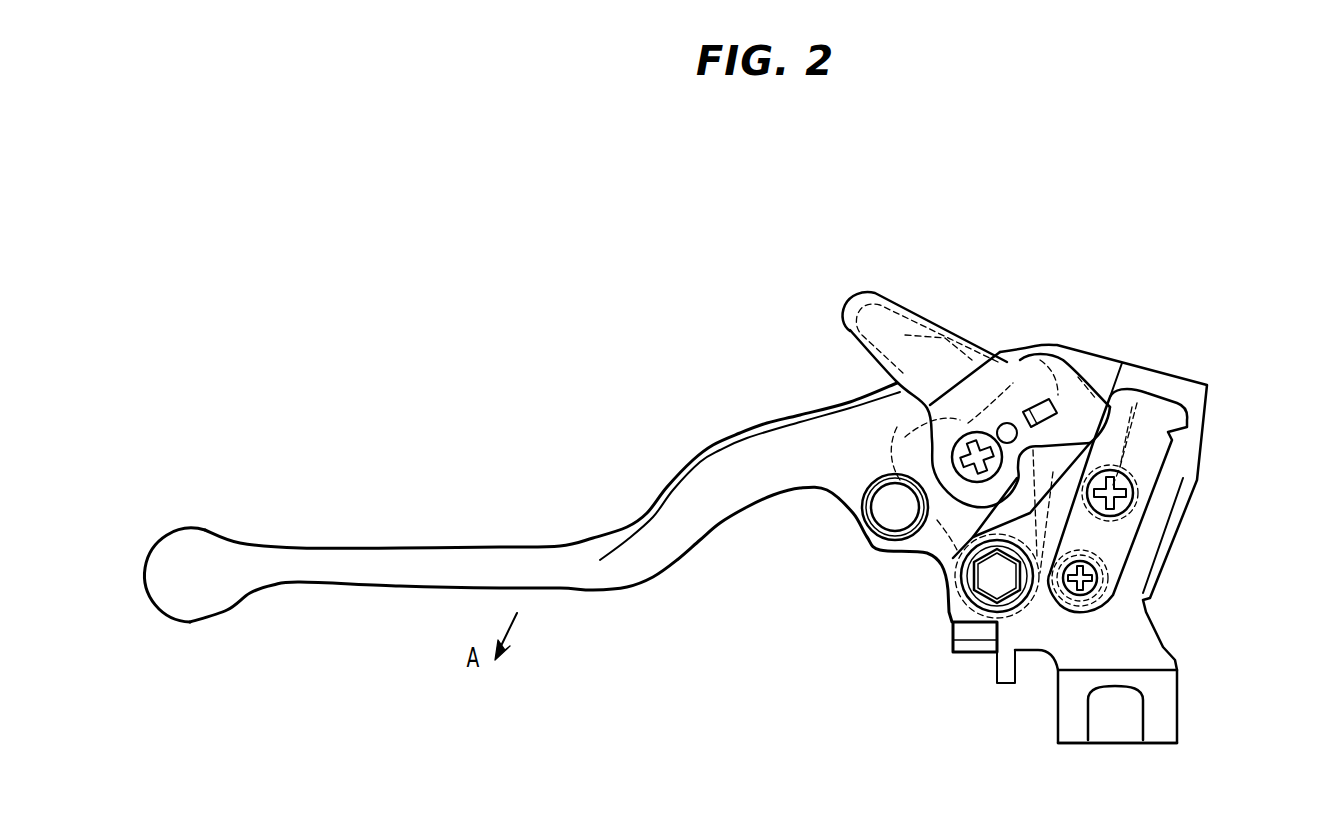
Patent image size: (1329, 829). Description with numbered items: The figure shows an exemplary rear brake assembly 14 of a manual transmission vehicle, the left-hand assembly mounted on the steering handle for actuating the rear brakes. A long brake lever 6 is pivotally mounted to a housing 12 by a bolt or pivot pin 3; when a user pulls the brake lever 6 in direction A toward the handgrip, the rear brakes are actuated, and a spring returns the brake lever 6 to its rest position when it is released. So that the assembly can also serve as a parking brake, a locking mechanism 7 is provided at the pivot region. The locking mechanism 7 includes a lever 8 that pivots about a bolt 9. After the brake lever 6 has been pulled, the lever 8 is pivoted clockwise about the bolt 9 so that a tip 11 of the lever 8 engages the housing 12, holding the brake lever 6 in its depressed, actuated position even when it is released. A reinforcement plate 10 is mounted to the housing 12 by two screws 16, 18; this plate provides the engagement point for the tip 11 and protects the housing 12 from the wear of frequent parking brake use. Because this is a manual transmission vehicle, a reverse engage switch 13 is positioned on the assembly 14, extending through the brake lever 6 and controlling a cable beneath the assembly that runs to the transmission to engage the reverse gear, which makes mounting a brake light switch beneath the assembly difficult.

The pivot pin 3 is at (990, 583).
The brake lever 6 is at (717, 445).
The locking mechanism 7 is at (1018, 335).
The lever 8 is at (918, 330).
The bolt 9 is at (972, 432).
The reinforcement plate 10 is at (1115, 537).
The tip 11 is at (1132, 407).
The housing 12 is at (1157, 655).
The reverse engage switch 13 is at (873, 543).
The rear brake assembly 14 is at (1218, 312).
The screw 16 is at (1143, 506).
The screw 18 is at (1110, 597).